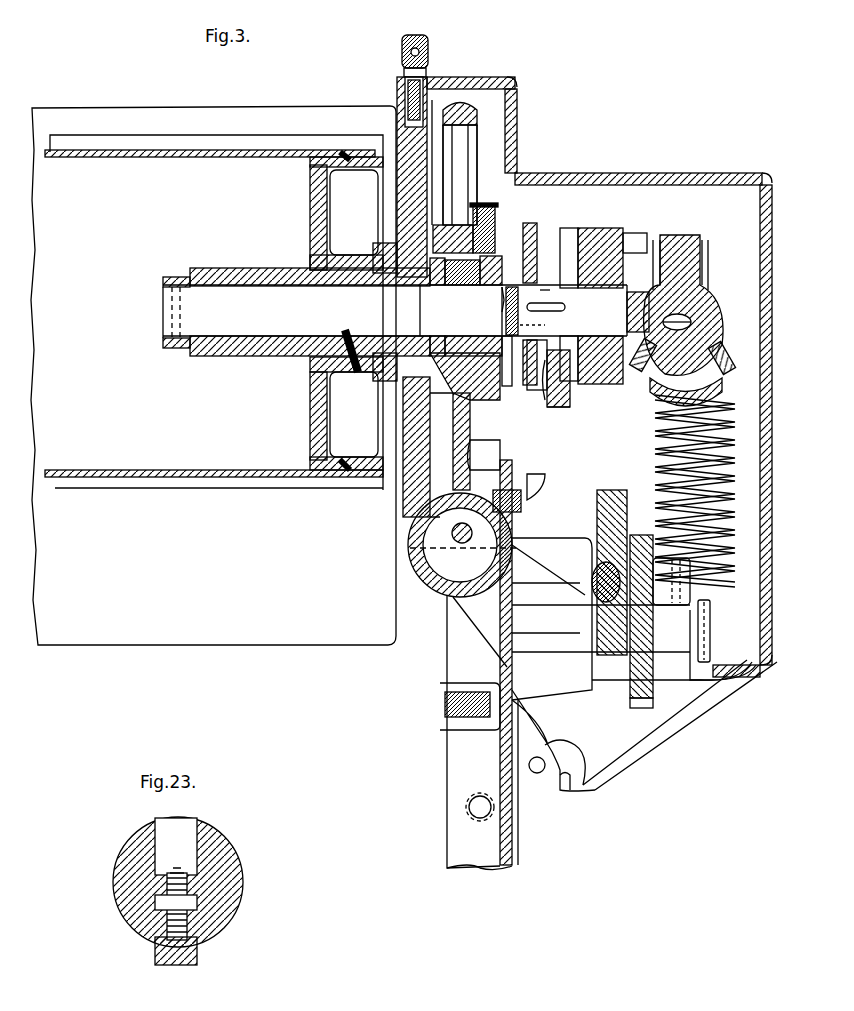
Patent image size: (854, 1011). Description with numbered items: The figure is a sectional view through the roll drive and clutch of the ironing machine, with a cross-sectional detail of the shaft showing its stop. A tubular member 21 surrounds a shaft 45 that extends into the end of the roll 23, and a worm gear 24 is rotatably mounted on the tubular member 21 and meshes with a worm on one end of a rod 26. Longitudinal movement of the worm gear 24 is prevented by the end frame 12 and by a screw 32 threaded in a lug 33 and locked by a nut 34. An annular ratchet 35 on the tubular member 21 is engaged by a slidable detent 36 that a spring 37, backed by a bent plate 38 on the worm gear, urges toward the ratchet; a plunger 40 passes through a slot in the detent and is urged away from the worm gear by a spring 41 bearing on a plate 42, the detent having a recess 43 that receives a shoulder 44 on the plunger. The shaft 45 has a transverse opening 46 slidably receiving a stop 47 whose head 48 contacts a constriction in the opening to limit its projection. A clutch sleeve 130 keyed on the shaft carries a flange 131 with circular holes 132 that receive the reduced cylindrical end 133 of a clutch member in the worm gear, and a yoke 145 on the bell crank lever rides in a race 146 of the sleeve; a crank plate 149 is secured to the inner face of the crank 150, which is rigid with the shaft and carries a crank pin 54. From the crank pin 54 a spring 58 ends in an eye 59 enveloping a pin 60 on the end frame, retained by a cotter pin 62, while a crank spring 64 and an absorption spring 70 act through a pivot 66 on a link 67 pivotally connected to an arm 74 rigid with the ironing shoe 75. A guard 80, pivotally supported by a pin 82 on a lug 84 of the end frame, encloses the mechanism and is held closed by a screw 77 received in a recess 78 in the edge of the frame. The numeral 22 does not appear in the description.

In FIG. 3, the end frame 12 is at (512, 852).
In FIG. 3, the tubular member 21 is at (432, 300).
In FIG. 3, the pin 22 is at (394, 340).
In FIG. 3, the roll 23 is at (250, 460).
In FIG. 3, the worm gear 24 is at (470, 490).
In FIG. 3, the rod 26 is at (465, 537).
In FIG. 3, the screw 32 is at (543, 484).
In FIG. 3, the lug 33 is at (498, 490).
In FIG. 3, the nut 34 is at (515, 512).
In FIG. 3, the annular ratchet 35 is at (543, 296).
In FIG. 3, the slidable detent 36 is at (475, 250).
In FIG. 3, the spring 37 is at (484, 205).
In FIG. 3, the bent plate 38 is at (482, 203).
In FIG. 3, the plunger 40 is at (505, 250).
In FIG. 3, the spring 41 is at (466, 285).
In FIG. 3, the plate 42 is at (437, 285).
In FIG. 3, the recess 43 is at (487, 286).
In FIG. 3, the shoulder 44 is at (383, 243).
In FIG. 3, the shaft 45 is at (575, 380).
In FIG. 3, the transverse opening 46 is at (534, 311).
In FIG. 23, the transverse opening 46 is at (200, 905).
In FIG. 3, the stop 47 is at (527, 385).
In FIG. 23, the stop 47 is at (200, 960).
In FIG. 3, the head 48 is at (513, 289).
In FIG. 23, the head 48 is at (185, 873).
In FIG. 3, the crank pin 54 is at (708, 262).
In FIG. 3, the spring 58 is at (735, 480).
In FIG. 3, the eye 59 is at (712, 678).
In FIG. 3, the pin 60 is at (712, 610).
In FIG. 3, the cotter pin 62 is at (710, 665).
In FIG. 3, the crank spring 64 is at (730, 360).
In FIG. 3, the pivot 66 is at (690, 580).
In FIG. 3, the link 67 is at (645, 708).
In FIG. 3, the absorption spring 70 is at (722, 390).
In FIG. 3, the arm 74 is at (566, 500).
In FIG. 3, the ironing shoe 75 is at (198, 120).
In FIG. 3, the screw 77 is at (424, 45).
In FIG. 3, the recess 78 is at (440, 100).
In FIG. 3, the guard 80 is at (644, 732).
In FIG. 3, the pin 82 is at (528, 765).
In FIG. 3, the lug 84 is at (548, 785).
In FIG. 3, the clutch sleeve 130 is at (564, 292).
In FIG. 3, the flange 131 is at (548, 400).
In FIG. 3, the circular holes 132 is at (570, 407).
In FIG. 3, the reduced cylindrical end 133 is at (505, 386).
In FIG. 3, the yoke 145 is at (600, 380).
In FIG. 3, the race 146 is at (555, 270).
In FIG. 3, the crank plate 149 is at (570, 232).
In FIG. 3, the crank 150 is at (615, 232).